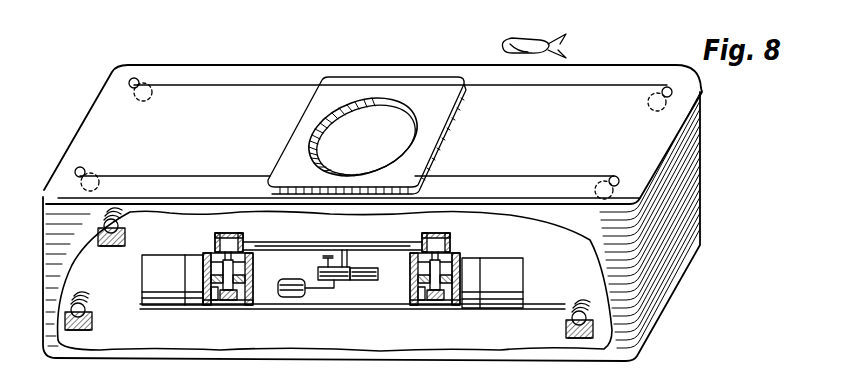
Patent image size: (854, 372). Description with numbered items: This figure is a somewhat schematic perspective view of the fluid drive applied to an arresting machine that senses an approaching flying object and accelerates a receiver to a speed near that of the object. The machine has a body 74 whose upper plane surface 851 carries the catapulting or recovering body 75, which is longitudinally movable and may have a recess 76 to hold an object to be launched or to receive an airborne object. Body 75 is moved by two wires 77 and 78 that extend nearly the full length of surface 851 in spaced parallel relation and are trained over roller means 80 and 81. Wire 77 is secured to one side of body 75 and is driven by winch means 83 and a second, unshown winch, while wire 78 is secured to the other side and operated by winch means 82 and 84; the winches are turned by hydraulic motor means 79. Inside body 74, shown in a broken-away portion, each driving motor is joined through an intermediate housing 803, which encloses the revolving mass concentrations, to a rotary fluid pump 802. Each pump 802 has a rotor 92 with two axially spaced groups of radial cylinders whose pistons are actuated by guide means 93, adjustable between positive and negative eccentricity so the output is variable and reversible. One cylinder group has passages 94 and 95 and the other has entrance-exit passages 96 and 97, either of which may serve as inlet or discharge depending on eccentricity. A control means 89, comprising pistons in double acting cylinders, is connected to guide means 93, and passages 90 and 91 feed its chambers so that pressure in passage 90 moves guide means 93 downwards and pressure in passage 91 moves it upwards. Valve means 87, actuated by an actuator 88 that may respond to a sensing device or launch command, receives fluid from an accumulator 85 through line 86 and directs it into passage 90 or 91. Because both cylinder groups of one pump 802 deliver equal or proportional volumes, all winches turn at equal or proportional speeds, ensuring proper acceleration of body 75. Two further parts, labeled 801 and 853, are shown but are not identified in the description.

The body 74 is at (648, 313).
The catapulting or recovering body 75 is at (430, 151).
The recess 76 is at (337, 131).
The wire 77 is at (556, 88).
The wire 78 is at (515, 174).
The hydraulic motor means 79 is at (109, 247).
The roller means 80 is at (150, 106).
The roller means 81 is at (648, 106).
The winch means 82 is at (94, 322).
The winch means 83 is at (126, 238).
The winch means 84 is at (584, 339).
The accumulator 85 is at (294, 280).
The line 86 is at (329, 290).
The valve means 87 is at (346, 282).
The actuator 88 is at (371, 268).
The control means 89 is at (216, 242).
The passage 90 is at (286, 241).
The passage 91 is at (304, 243).
The rotor 92 is at (240, 302).
The guide means 93 is at (226, 301).
The passage 94 is at (250, 277).
The passage 95 is at (236, 287).
The entrance-exit passage 96 is at (210, 262).
The entrance-exit passage 97 is at (208, 302).
The block 801 is at (146, 291).
The rotary fluid pump 802 is at (254, 306).
The intermediate housing 803 is at (192, 278).
The upper plane surface 851 is at (178, 138).
The tool 853 is at (502, 44).